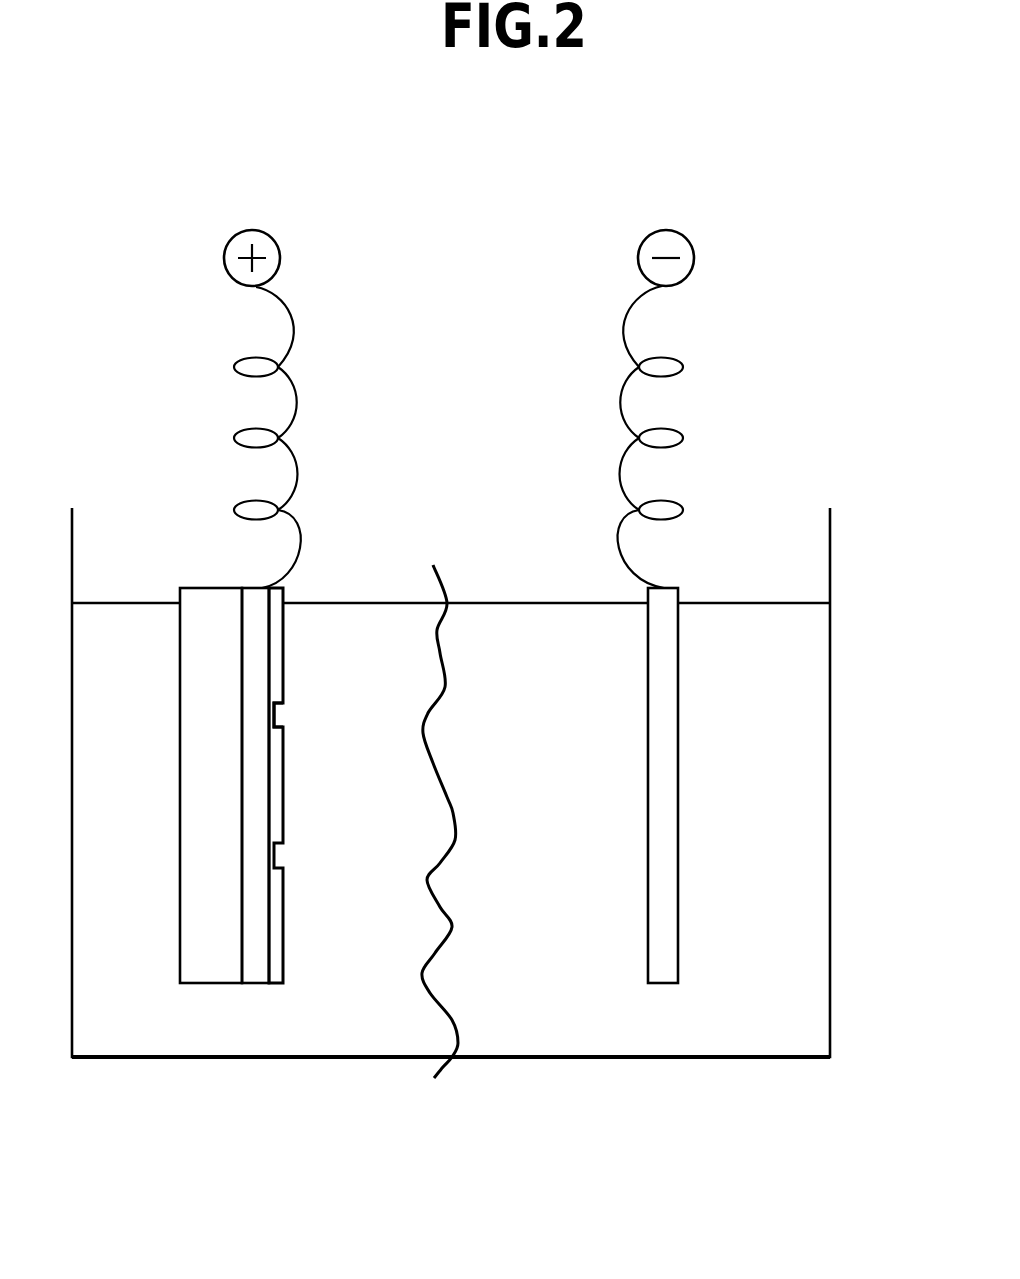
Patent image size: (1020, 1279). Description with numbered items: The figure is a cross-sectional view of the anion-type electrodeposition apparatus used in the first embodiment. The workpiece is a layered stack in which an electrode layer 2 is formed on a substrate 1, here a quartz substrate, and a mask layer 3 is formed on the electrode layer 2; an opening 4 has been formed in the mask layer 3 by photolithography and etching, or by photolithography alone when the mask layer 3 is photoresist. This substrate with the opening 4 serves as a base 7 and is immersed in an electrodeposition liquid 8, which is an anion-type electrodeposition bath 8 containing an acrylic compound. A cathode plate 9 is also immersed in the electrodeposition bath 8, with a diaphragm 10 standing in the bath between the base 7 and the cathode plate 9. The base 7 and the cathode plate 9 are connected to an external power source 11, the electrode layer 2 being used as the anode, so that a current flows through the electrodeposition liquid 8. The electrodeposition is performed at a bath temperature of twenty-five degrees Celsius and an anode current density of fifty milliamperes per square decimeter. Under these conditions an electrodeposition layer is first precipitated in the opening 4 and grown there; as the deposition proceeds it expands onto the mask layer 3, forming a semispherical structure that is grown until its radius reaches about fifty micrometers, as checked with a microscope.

The substrate 1 is at (200, 983).
The electrode layer 2 is at (255, 983).
The mask layer 3 is at (283, 972).
The opening 4 is at (277, 712).
The base 7 is at (270, 799).
The electrodeposition liquid 8 is at (800, 852).
The cathode plate 9 is at (675, 585).
The diaphragm 10 is at (445, 568).
The external power source 11 is at (278, 248).